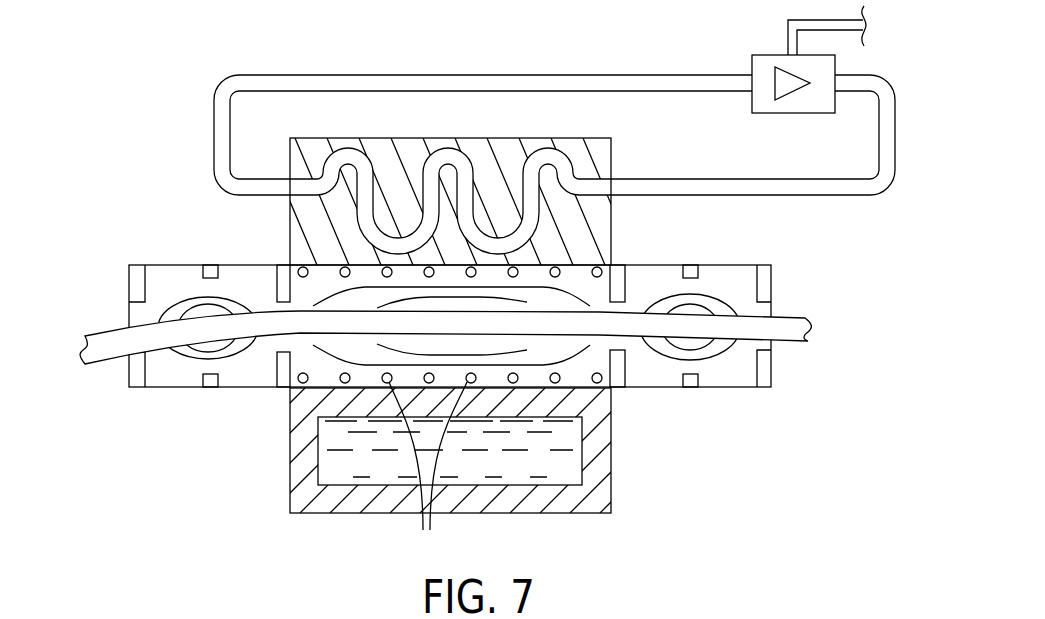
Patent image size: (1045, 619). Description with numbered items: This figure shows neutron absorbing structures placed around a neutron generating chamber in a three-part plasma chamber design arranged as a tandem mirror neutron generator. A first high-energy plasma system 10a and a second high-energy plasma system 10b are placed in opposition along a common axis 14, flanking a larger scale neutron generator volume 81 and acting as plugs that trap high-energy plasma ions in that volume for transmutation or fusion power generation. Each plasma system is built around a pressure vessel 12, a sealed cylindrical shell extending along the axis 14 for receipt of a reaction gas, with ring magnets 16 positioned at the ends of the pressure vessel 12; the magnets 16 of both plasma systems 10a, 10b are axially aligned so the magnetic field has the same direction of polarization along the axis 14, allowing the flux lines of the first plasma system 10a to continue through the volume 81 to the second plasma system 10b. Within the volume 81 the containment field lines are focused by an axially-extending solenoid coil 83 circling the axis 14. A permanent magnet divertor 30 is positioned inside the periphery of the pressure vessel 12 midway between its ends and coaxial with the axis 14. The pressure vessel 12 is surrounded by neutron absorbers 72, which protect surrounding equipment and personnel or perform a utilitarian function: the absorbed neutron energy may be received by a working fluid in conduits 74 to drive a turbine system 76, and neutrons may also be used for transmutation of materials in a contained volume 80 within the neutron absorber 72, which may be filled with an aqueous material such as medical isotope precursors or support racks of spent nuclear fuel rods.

The first high-energy plasma system 10a is at (118, 393).
The second high-energy plasma system 10b is at (778, 397).
The pressure vessel 12 is at (651, 265).
The axis 14 is at (827, 325).
The ring magnets 16 is at (138, 265).
The permanent magnet divertor 30 is at (210, 265).
The neutron absorbers 72 is at (275, 158).
The conduits 74 is at (367, 167).
The turbine system 76 is at (766, 55).
The contained volume 80 is at (568, 468).
The neutron generator volume 81 is at (578, 370).
The solenoid coil 83 is at (428, 470).